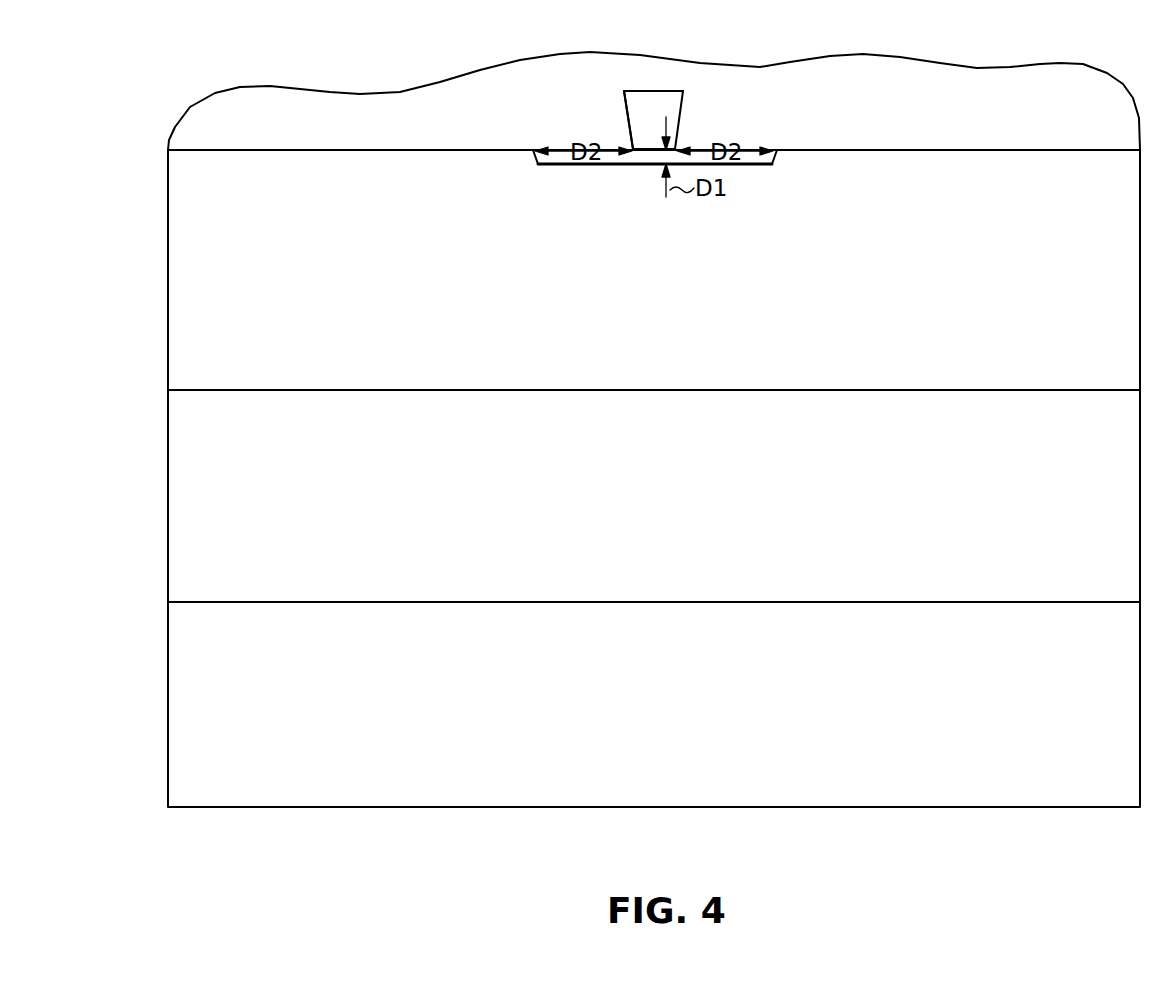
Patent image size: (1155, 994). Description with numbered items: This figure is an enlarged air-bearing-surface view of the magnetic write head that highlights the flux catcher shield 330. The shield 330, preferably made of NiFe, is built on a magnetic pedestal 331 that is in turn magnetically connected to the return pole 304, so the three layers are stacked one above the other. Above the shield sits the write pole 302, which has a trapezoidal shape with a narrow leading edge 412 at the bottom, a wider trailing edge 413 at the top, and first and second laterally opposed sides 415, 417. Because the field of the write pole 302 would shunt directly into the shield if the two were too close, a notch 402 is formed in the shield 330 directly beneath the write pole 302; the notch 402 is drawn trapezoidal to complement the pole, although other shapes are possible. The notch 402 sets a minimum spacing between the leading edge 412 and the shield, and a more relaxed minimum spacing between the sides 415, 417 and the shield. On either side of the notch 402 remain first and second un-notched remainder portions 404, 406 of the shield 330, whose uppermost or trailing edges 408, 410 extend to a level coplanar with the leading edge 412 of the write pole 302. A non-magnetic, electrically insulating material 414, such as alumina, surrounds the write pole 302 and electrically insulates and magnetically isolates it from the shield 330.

The write pole 302 is at (667, 110).
The return pole 304 is at (654, 478).
The flux catcher shield 330 is at (610, 318).
The magnetic pedestal 331 is at (622, 464).
The notch 402 is at (750, 164).
The first un-notched remainder portion 404 is at (927, 164).
The second un-notched remainder portion 406 is at (258, 165).
The uppermost edge of first un-notched portion 408 is at (1017, 150).
The uppermost edge of second un-notched portion 410 is at (390, 150).
The leading edge 412 is at (640, 164).
The trailing edge 413 is at (643, 91).
The non-magnetic, electrically insulating material 414 is at (892, 98).
The first laterally opposed side 415 is at (680, 127).
The second laterally opposed side 417 is at (625, 110).